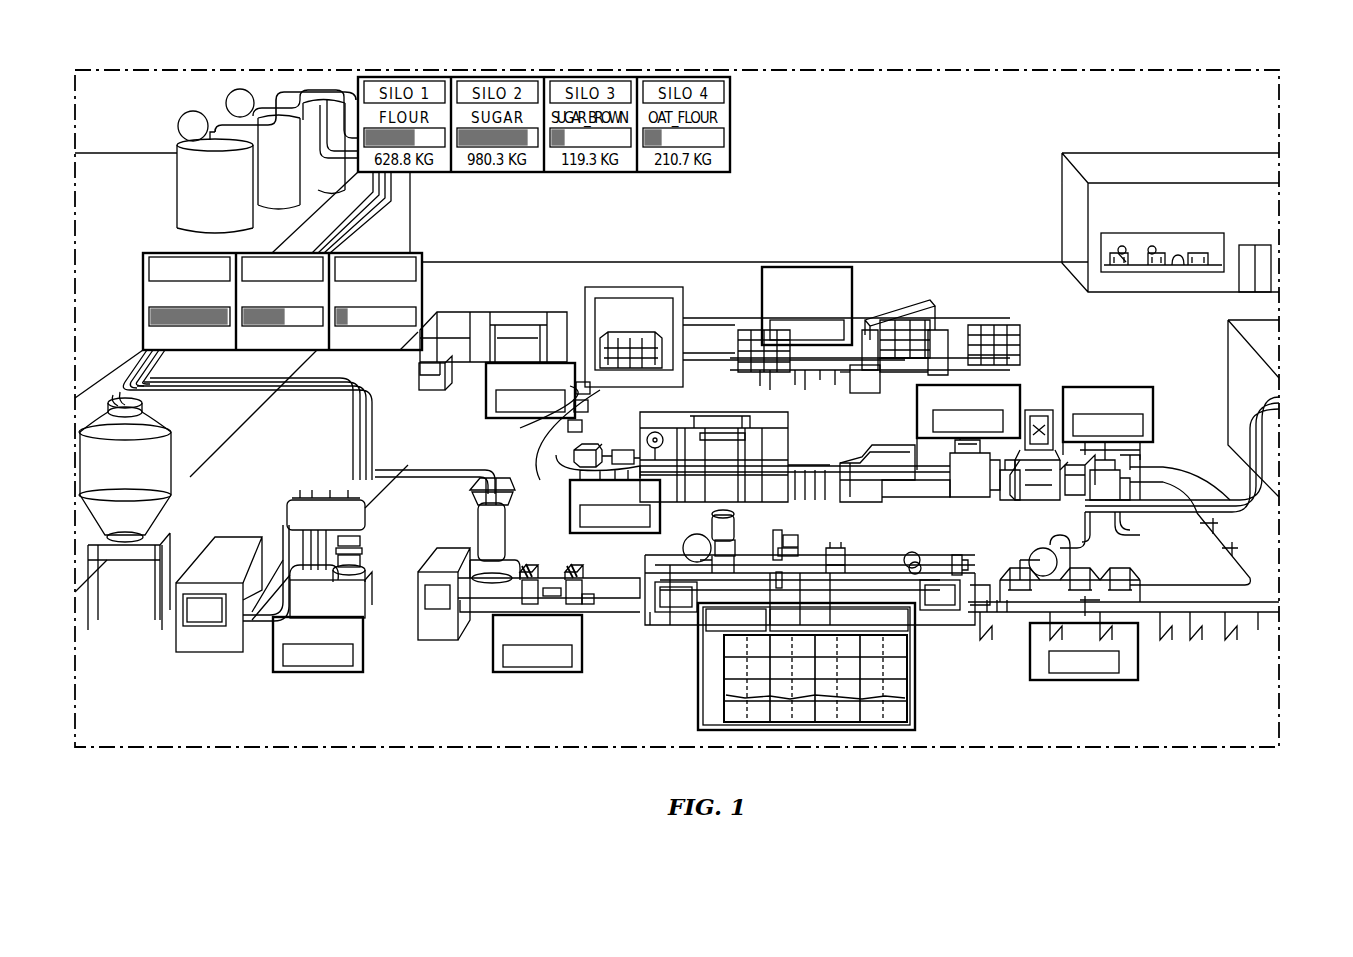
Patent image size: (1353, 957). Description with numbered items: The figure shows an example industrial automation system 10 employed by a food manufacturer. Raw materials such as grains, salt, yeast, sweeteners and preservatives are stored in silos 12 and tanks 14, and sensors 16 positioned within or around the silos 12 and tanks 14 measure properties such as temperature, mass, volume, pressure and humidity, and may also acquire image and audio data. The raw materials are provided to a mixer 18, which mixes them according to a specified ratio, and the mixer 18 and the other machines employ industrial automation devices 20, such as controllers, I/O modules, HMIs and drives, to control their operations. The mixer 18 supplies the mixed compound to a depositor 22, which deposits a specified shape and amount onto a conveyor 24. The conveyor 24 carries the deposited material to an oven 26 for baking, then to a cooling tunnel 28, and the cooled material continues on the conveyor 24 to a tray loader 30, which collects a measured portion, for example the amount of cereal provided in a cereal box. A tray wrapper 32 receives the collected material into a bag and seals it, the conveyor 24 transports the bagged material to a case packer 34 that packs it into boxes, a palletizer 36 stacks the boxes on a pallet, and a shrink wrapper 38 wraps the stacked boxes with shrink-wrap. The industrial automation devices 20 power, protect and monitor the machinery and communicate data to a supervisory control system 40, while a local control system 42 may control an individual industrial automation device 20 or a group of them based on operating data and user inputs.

The industrial automation system 10 is at (1212, 26).
The silos 12 is at (292, 100).
The tanks 14 is at (128, 312).
The sensors 16 is at (192, 110).
The mixer 18 is at (366, 626).
The industrial automation devices 20 is at (1036, 402).
The depositor 22 is at (598, 615).
The conveyor 24 is at (820, 442).
The oven 26 is at (884, 543).
The cooling tunnel 28 is at (1132, 596).
The tray loader 30 is at (1155, 415).
The tray wrapper 32 is at (905, 400).
The case packer 34 is at (556, 496).
The palletizer 36 is at (455, 402).
The shrink wrapper 38 is at (862, 280).
The supervisory control system 40 is at (1174, 238).
The local control system 42 is at (205, 624).